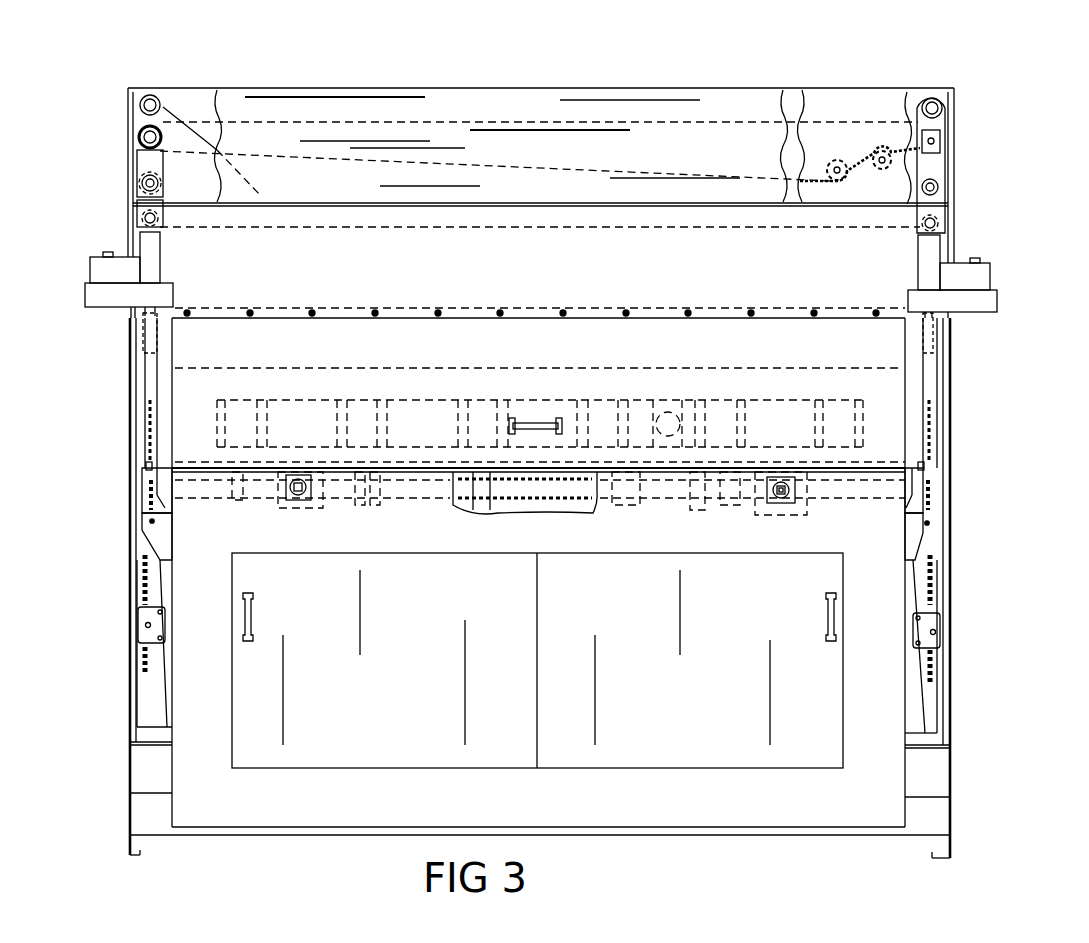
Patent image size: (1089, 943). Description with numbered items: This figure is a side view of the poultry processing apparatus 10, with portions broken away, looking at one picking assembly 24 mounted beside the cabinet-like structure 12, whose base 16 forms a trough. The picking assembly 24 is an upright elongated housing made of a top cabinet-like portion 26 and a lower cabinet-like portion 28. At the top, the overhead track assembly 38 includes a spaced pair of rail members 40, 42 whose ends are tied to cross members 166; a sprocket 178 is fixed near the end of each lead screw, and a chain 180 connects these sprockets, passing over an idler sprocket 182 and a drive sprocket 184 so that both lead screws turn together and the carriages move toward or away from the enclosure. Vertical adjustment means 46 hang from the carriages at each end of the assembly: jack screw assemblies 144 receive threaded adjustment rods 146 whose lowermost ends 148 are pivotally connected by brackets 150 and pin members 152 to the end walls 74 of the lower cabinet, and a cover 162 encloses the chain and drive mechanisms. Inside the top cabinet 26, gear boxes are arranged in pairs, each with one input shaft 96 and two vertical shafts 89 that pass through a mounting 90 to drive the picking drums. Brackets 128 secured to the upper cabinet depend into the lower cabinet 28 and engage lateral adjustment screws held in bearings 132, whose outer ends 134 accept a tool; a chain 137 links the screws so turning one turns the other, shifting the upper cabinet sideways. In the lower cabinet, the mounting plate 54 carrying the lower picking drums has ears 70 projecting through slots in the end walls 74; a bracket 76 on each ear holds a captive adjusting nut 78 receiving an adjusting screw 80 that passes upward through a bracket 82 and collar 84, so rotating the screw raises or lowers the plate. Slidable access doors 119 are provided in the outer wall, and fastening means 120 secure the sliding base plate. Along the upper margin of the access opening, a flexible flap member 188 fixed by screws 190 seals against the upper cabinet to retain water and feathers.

The poultry processing apparatus 10 is at (975, 155).
The cabinet-like structure 12 is at (952, 605).
The base 16 is at (142, 820).
The picking assembly 24 is at (865, 745).
The top cabinet-like portion 26 is at (888, 413).
The lower cabinet-like portion 28 is at (895, 707).
The overhead track assembly 38 is at (960, 88).
The rail member 40 is at (140, 105).
The rail member 42 is at (140, 181).
The vertical adjustment means 46 is at (132, 234).
The mounting plate 54 is at (270, 578).
The ears 70 is at (165, 598).
The end walls 74 is at (168, 760).
The bracket 76 is at (140, 622).
The adjusting nut 78 is at (146, 628).
The adjusting screws 80 is at (143, 667).
The brackets 82 is at (160, 482).
The collar or bearing 84 is at (147, 465).
The vertical shafts 89 is at (232, 497).
The mounting 90 is at (215, 462).
The input shaft 96 is at (412, 400).
The slidable access doors 119 is at (356, 705).
The fastening means 120 is at (510, 212).
The brackets 128 is at (318, 508).
The bearing or collar 132 is at (298, 500).
The outer end 134 is at (795, 488).
The chain 137 is at (696, 510).
The jack screw assemblies 144 is at (162, 259).
The adjustment rod 146 is at (152, 378).
The lowermost end 148 is at (150, 500).
The bracket 150 is at (173, 532).
The pin member 152 is at (150, 522).
The cover 162 is at (985, 276).
The cross members 166 is at (411, 88).
The sprocket 178 is at (942, 133).
The chain 180 is at (209, 120).
The idler sprocket 182 is at (830, 162).
The drive sprocket 184 is at (881, 171).
The flexible flap member 188 is at (205, 350).
The screws 190 is at (250, 310).